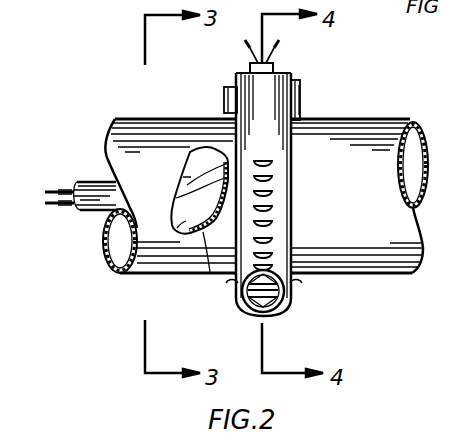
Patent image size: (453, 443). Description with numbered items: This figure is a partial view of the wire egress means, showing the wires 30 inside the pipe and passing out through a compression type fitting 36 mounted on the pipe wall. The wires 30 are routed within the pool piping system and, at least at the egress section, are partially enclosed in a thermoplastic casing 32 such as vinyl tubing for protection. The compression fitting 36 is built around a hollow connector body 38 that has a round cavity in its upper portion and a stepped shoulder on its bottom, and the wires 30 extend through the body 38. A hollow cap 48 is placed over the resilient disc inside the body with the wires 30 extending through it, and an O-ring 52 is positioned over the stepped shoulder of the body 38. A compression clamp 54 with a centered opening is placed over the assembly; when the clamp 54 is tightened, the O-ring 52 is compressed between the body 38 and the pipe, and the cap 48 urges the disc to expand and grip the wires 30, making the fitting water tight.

The wires 30 is at (248, 56).
The thermoplastic casing 32 is at (212, 274).
The compression fitting 36 is at (300, 94).
The hollow connector body 38 is at (300, 106).
The hollow cap 48 is at (225, 90).
The O-ring 52 is at (218, 118).
The compression clamp 54 is at (290, 297).